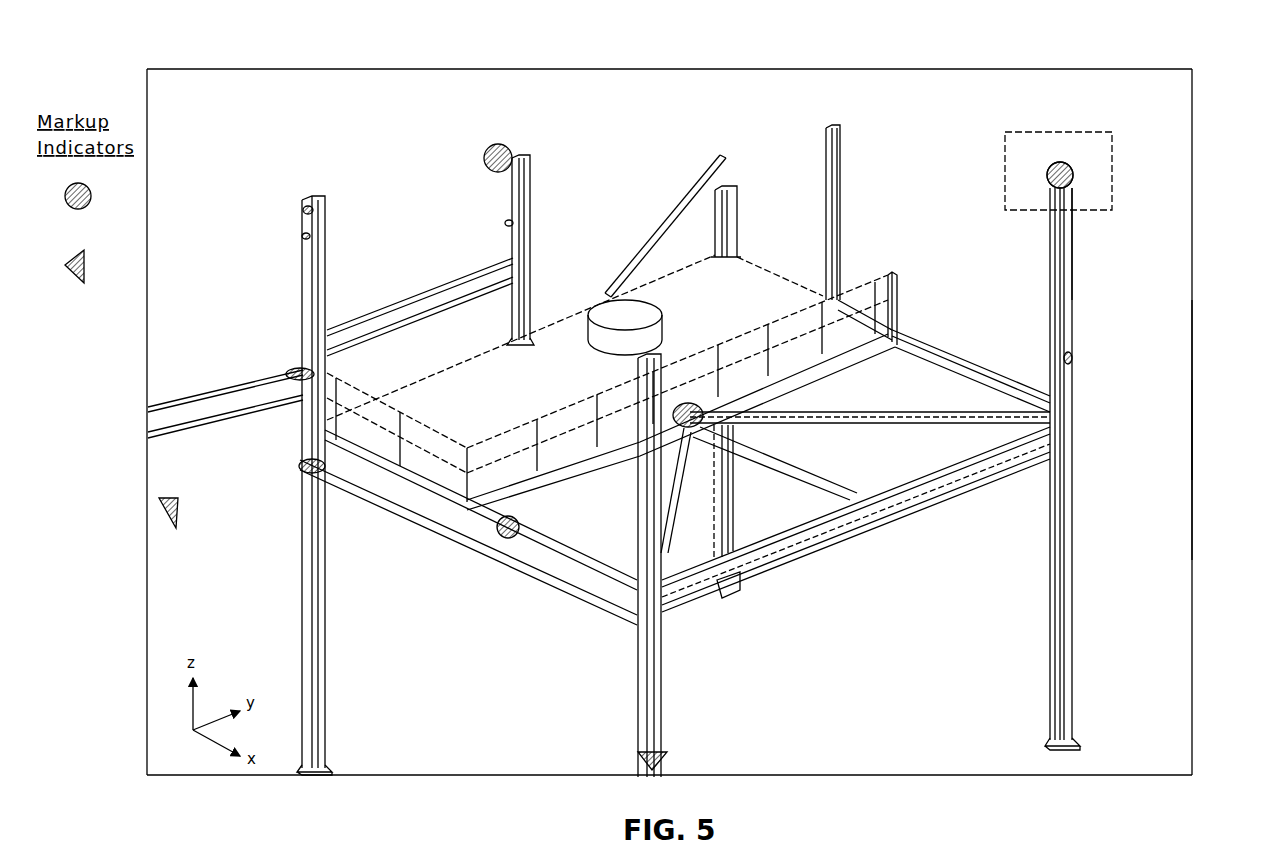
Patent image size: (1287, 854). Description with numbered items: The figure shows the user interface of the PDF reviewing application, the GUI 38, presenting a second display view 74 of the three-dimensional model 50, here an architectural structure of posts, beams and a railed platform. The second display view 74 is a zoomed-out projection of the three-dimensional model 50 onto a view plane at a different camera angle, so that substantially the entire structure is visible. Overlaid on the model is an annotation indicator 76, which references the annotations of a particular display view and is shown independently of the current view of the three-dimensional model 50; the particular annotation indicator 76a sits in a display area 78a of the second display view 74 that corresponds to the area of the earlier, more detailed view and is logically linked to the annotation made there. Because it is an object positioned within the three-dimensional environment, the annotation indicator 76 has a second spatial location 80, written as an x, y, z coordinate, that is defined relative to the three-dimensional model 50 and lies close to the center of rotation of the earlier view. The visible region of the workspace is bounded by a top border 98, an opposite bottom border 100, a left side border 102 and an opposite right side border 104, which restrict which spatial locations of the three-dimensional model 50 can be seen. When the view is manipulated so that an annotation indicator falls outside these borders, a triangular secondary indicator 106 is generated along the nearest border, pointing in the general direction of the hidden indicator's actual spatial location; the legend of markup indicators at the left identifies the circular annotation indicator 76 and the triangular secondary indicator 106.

The top border 98 is at (345, 68).
The second display view 74 is at (981, 107).
The second spatial location 80 is at (1070, 165).
The annotation indicator 76 is at (496, 148).
The annotation indicator 76a is at (1060, 175).
The display area 78a is at (1080, 192).
The GUI 38 is at (1192, 430).
The three-dimensional model 50 is at (662, 672).
The bottom border 100 is at (333, 778).
The left side border 102 is at (147, 578).
The right side border 104 is at (1192, 588).
The secondary indicator 106 is at (176, 520).